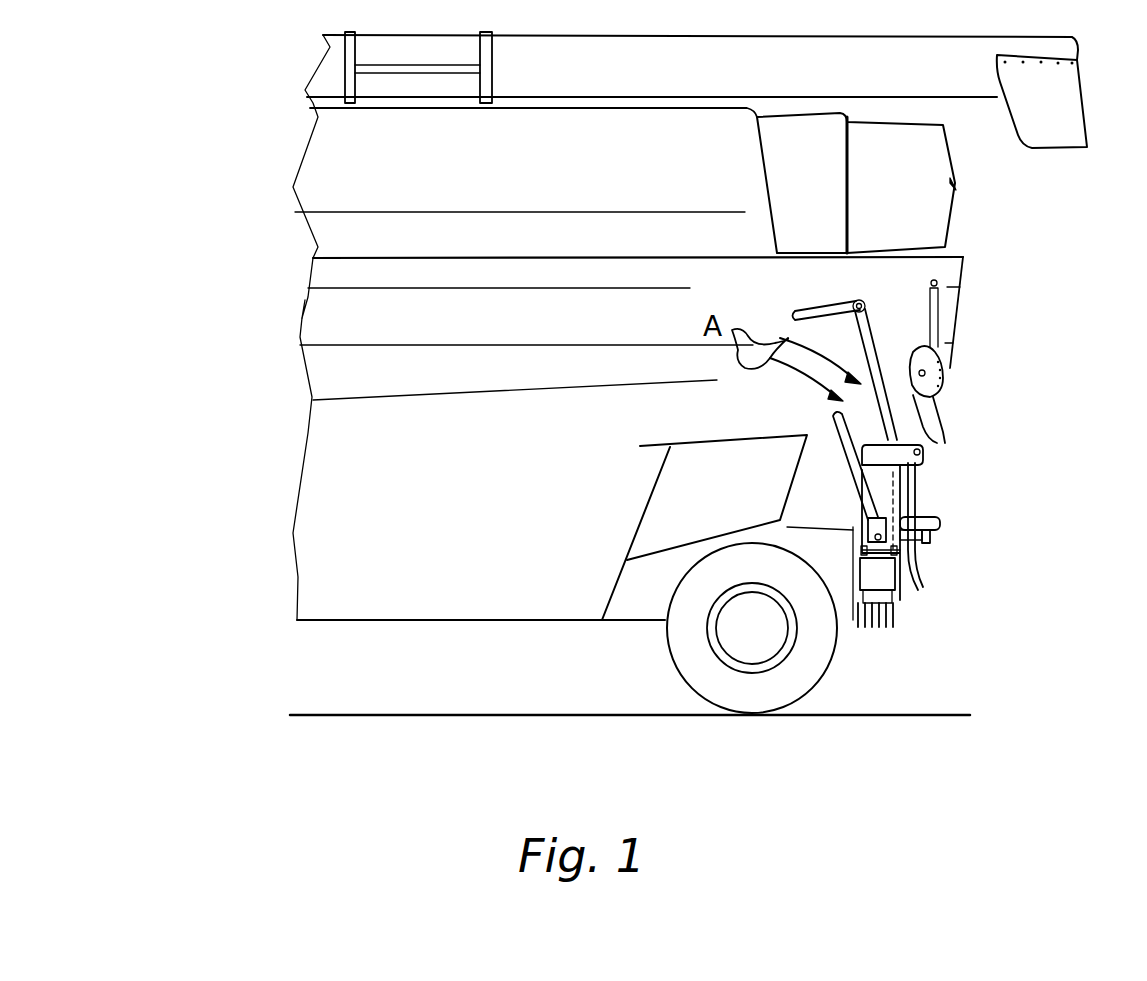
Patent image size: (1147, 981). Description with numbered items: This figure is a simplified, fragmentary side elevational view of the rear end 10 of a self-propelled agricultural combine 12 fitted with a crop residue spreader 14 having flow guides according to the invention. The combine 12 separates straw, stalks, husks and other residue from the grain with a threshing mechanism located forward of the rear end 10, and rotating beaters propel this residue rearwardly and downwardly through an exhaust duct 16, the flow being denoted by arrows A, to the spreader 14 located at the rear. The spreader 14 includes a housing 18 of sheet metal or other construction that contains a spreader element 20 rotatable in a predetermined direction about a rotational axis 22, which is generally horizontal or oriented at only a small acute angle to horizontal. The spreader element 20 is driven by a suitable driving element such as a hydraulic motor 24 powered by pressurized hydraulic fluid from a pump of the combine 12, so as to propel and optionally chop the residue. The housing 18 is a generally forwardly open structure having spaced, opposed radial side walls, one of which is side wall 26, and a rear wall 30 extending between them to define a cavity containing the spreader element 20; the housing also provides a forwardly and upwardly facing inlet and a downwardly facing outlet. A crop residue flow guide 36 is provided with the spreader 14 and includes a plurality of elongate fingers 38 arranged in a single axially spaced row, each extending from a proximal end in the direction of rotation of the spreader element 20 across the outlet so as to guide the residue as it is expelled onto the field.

The rear end 10 is at (965, 275).
The self-propelled agricultural combine 12 is at (202, 584).
The crop spreader 14 is at (907, 497).
The exhaust duct 16 is at (843, 345).
The housing 18 is at (913, 440).
The spreader element 20 is at (877, 470).
The rotational axis 22 is at (910, 538).
The hydraulic motor 24 is at (927, 547).
The radial side wall 26 is at (880, 493).
The rear wall 30 is at (903, 518).
The crop residue flow guide 36 is at (893, 627).
The elongate finger 38 is at (870, 627).